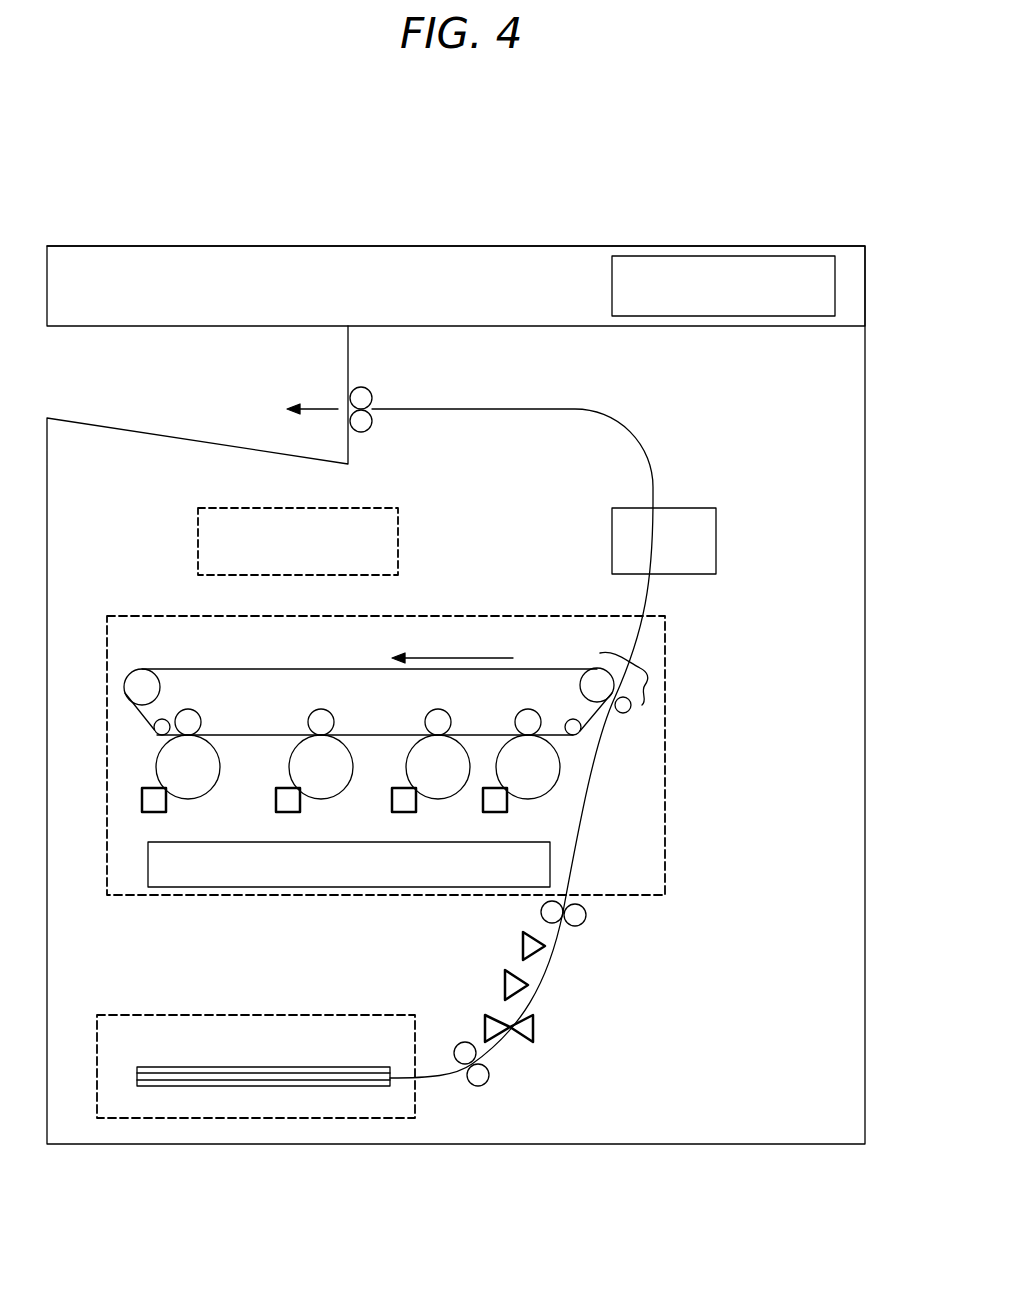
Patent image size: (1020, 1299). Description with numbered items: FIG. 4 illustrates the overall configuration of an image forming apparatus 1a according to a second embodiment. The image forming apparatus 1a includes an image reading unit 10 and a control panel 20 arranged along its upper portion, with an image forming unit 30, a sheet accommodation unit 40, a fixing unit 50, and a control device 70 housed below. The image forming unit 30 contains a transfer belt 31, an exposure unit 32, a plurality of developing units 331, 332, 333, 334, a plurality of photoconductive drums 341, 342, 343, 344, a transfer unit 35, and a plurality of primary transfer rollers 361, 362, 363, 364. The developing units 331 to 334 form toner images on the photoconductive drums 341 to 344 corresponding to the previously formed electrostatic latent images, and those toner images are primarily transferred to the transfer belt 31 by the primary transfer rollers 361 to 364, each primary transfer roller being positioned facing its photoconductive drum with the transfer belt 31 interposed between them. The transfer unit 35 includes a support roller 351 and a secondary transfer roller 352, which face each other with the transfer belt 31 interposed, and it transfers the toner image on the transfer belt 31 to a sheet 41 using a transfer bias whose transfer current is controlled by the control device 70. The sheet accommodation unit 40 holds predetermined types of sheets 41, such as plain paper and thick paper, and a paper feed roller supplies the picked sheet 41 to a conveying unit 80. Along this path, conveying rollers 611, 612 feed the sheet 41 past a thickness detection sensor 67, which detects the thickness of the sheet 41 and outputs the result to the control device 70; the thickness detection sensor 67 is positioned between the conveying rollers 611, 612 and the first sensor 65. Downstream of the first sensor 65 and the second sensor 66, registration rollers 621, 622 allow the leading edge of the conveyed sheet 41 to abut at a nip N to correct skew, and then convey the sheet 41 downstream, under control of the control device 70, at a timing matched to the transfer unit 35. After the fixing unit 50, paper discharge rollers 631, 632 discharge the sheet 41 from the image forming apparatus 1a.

The image forming apparatus 1a is at (826, 174).
The image reading unit 10 is at (336, 246).
The control panel 20 is at (728, 268).
The image forming unit 30 is at (455, 616).
The transfer belt 31 is at (290, 669).
The exposure unit 32 is at (148, 862).
The developing unit 331 is at (142, 798).
The developing unit 332 is at (276, 798).
The developing unit 333 is at (392, 798).
The developing unit 334 is at (483, 798).
The photoconductive drum 341 is at (160, 759).
The photoconductive drum 342 is at (292, 765).
The photoconductive drum 343 is at (408, 776).
The photoconductive drum 344 is at (553, 778).
The transfer unit 35 is at (645, 668).
The support roller 351 is at (585, 675).
The secondary transfer roller 352 is at (632, 705).
The primary transfer roller 361 is at (197, 716).
The primary transfer roller 362 is at (327, 712).
The primary transfer roller 363 is at (443, 712).
The primary transfer roller 364 is at (531, 712).
The sheet accommodation unit 40 is at (298, 1015).
The sheet 41 is at (240, 1067).
The fixing unit 50 is at (700, 508).
The conveying roller 611 is at (462, 1042).
The conveying roller 612 is at (490, 1078).
The registration roller 621 is at (541, 911).
The registration roller 622 is at (586, 915).
The paper discharge roller 631 is at (371, 430).
The paper discharge roller 632 is at (370, 389).
The first sensor 65 is at (505, 985).
The second sensor 66 is at (540, 955).
The thickness detection sensor 67 is at (536, 1030).
The control device 70 is at (398, 535).
The conveying unit 80 is at (590, 409).
The nip N is at (563, 927).